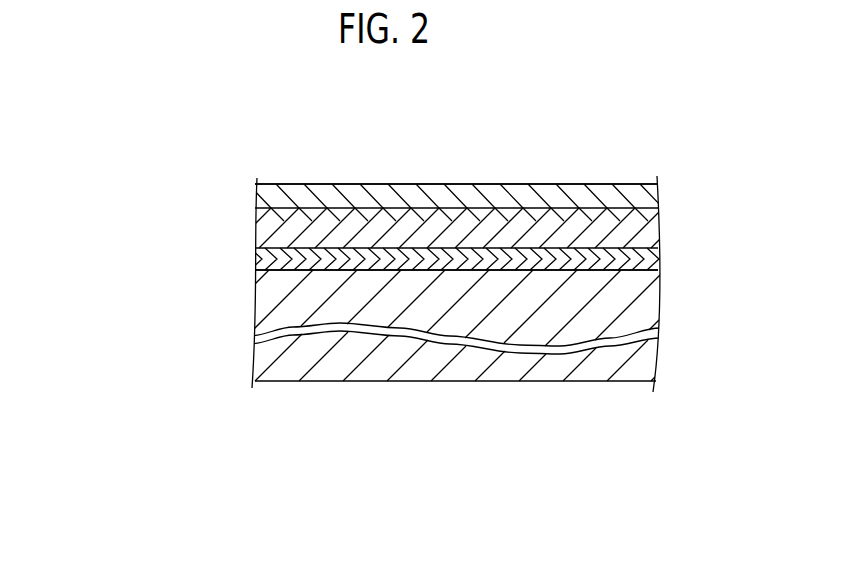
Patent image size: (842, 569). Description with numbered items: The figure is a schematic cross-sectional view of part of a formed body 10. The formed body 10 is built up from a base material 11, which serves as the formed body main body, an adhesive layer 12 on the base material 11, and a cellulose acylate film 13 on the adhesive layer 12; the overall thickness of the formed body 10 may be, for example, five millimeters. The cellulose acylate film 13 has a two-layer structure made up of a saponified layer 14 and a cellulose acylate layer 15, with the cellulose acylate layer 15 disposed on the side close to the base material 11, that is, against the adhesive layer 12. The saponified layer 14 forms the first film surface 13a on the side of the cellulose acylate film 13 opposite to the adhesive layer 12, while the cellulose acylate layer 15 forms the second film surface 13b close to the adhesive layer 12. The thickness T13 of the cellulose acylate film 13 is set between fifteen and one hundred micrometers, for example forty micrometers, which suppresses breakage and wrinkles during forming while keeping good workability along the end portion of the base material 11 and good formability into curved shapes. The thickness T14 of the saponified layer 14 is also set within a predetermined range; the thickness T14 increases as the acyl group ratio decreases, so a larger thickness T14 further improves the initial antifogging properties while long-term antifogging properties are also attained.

The formed body 10 is at (413, 292).
The base material 11 is at (647, 302).
The adhesive layer 12 is at (652, 258).
The cellulose acylate film 13 is at (407, 213).
The first film surface 13a is at (283, 184).
The second film surface 13b is at (255, 288).
The saponified layer 14 is at (650, 190).
The cellulose acylate layer 15 is at (652, 224).
The thickness of the cellulose acylate film T13 is at (195, 135).
The thickness of the saponified layer T14 is at (219, 260).